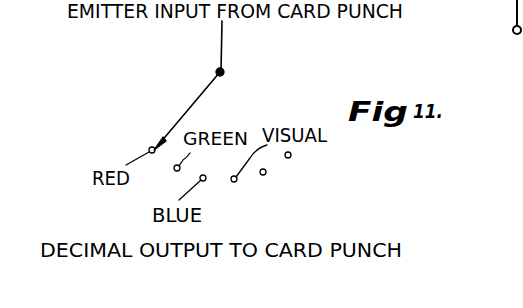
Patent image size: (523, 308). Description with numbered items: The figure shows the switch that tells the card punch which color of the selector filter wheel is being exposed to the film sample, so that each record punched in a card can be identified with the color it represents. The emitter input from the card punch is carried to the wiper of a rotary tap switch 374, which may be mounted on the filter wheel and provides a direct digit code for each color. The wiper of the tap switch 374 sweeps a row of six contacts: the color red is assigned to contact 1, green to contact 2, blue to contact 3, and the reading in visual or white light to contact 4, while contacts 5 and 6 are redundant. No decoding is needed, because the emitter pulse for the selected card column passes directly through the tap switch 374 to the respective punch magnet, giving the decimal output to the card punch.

The rotary tap switch 374 is at (207, 88).
The contact 1 is at (140, 160).
The contact 2 is at (178, 173).
The contact 3 is at (193, 188).
The contact 4 is at (247, 174).
The contact 5 is at (267, 182).
The contact 6 is at (289, 166).